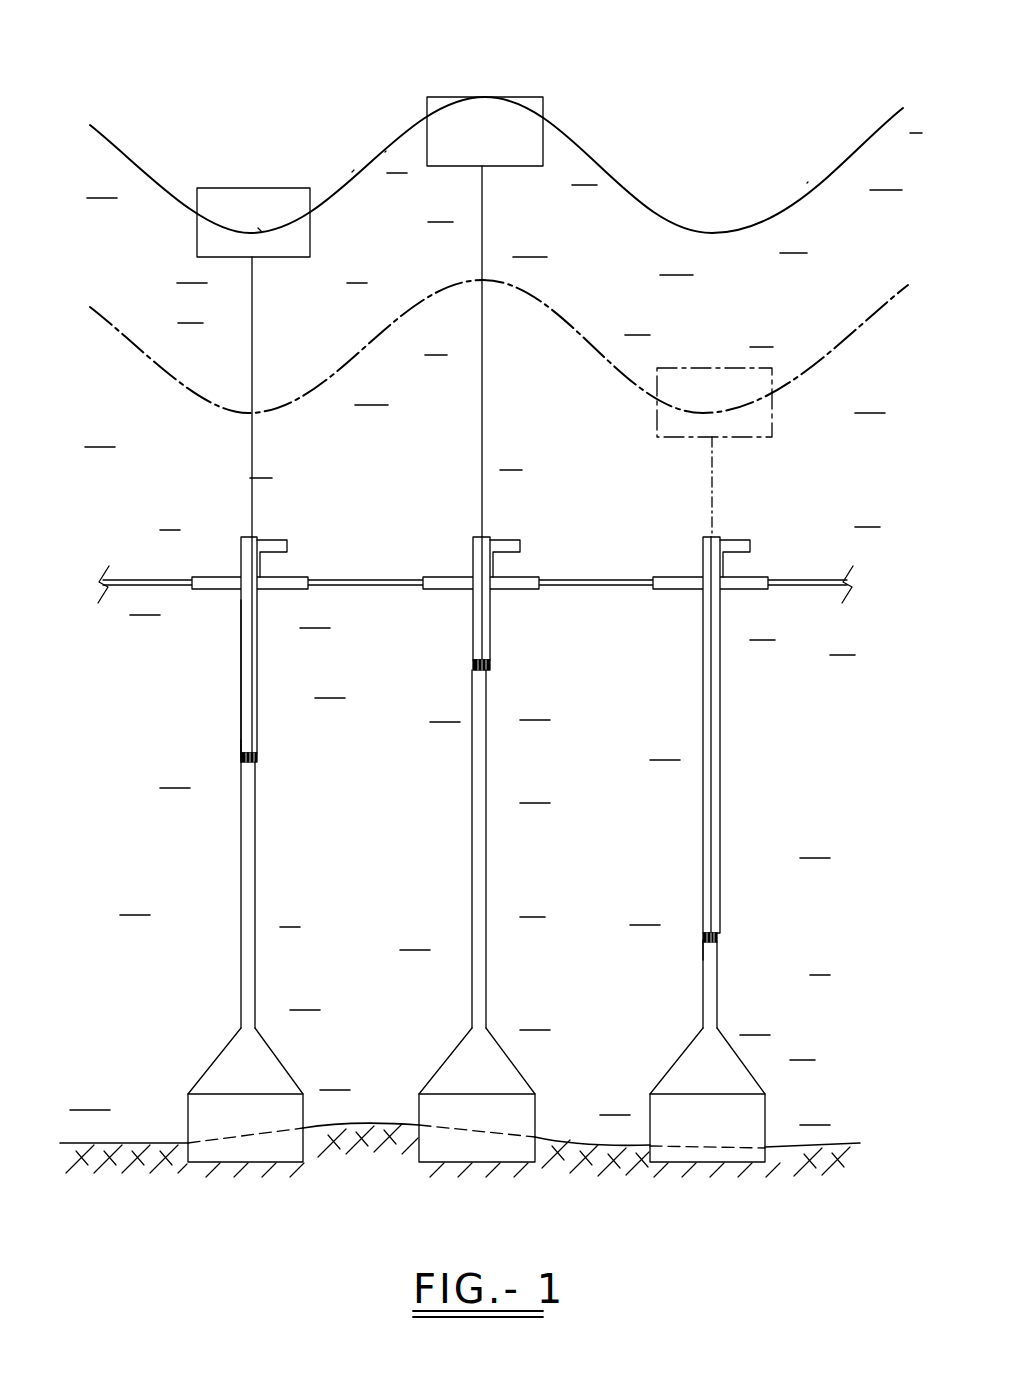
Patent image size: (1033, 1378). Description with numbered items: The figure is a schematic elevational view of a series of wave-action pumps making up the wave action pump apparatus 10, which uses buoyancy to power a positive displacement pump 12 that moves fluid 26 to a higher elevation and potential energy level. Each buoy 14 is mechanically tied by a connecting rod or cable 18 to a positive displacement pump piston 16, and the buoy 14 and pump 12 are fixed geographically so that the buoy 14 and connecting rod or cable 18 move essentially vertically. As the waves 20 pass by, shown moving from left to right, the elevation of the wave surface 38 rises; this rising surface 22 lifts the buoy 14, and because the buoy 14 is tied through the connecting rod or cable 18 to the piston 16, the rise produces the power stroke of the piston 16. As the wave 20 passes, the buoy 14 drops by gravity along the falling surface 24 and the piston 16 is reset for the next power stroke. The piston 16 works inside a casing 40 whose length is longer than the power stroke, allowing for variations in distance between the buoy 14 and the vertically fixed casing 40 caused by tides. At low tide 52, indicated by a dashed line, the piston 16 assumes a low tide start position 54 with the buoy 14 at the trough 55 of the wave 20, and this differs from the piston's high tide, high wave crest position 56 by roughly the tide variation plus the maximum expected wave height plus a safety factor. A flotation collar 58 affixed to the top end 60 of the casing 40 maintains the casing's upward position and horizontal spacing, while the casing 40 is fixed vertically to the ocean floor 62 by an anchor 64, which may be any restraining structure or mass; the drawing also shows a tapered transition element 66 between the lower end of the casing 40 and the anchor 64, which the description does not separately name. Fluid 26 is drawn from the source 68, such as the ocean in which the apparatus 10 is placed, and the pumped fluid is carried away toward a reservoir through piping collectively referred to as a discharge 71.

The wave action pump apparatus 10 is at (248, 118).
The positive displacement pump 12 is at (240, 665).
The buoy 14 is at (518, 97).
The piston 16 is at (241, 757).
The connecting rod or cable 18 is at (252, 352).
The wave 20 is at (352, 172).
The rising surface 22 is at (118, 143).
The falling surface 24 is at (385, 152).
The fluid 26 is at (484, 657).
The wave surface 38 is at (807, 183).
The casing 40 is at (241, 887).
The low tide 52 is at (822, 348).
The low tide start position 54 is at (698, 944).
The trough 55 is at (712, 233).
The high tide, high wave crest position 56 is at (237, 748).
The flotation collar 58 is at (215, 577).
The top end 60 is at (231, 565).
The ocean floor 62 is at (372, 1125).
The anchor 64 is at (245, 1163).
The anchor cone 66 is at (205, 1094).
The source 68 is at (600, 770).
The discharge 71 is at (287, 547).